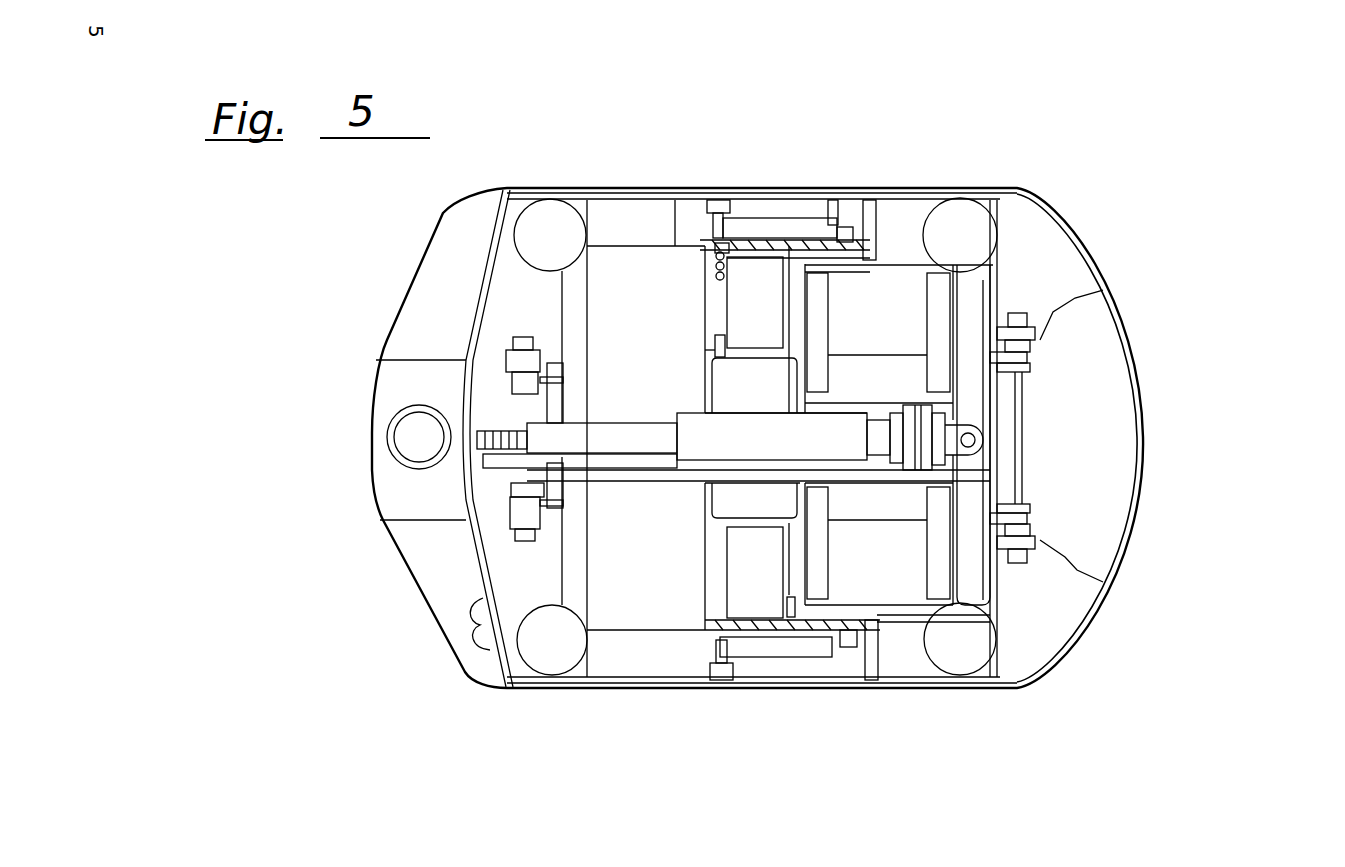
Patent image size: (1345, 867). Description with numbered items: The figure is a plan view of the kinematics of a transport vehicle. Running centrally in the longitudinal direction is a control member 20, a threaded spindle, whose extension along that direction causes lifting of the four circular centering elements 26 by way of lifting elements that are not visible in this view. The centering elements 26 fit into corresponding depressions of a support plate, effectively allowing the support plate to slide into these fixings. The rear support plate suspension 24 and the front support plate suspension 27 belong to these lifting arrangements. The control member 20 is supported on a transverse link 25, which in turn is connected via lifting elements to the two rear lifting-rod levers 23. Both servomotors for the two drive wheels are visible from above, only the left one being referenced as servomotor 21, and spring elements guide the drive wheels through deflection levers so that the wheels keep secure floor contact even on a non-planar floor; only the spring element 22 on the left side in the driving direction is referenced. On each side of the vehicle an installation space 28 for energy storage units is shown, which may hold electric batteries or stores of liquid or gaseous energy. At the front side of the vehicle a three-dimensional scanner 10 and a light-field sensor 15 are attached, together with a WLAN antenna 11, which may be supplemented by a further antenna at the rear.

The 3-D scanner 10 is at (388, 455).
The WLAN antenna 11 is at (482, 633).
The light-field sensor 15 is at (374, 444).
The control member 20 is at (733, 433).
The servomotor 21 is at (755, 585).
The spring element 22 is at (843, 645).
The rear lifting-rod lever 23 is at (1003, 507).
The rear support plate suspension 24 is at (1020, 536).
The transverse link 25 is at (970, 298).
The centering element 26 is at (953, 227).
The front support plate suspension 27 is at (510, 522).
The installation space for energy storage units 28 is at (650, 563).